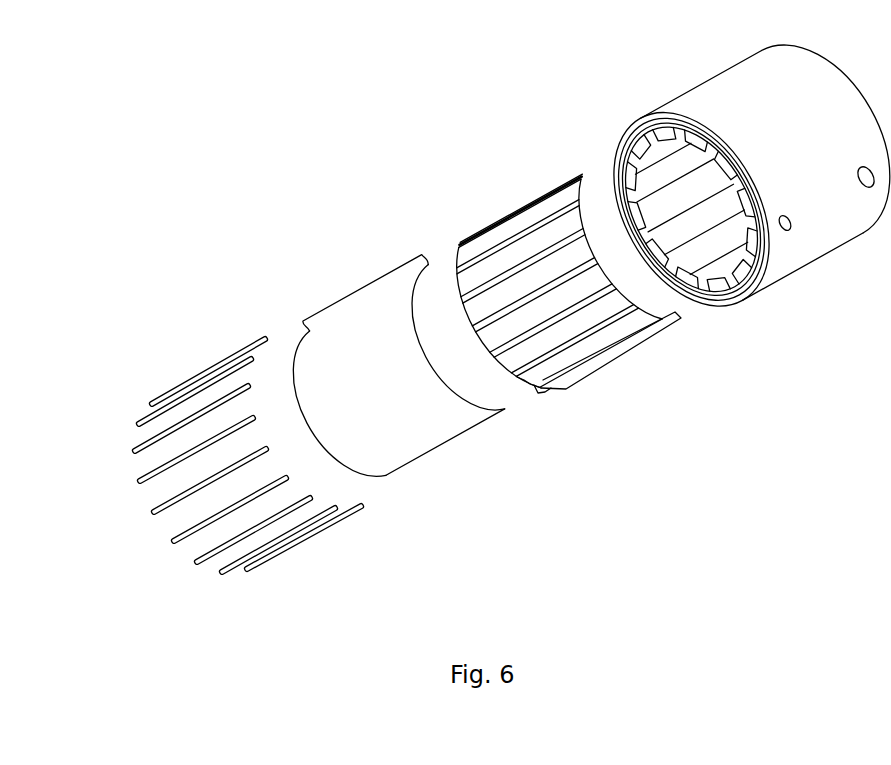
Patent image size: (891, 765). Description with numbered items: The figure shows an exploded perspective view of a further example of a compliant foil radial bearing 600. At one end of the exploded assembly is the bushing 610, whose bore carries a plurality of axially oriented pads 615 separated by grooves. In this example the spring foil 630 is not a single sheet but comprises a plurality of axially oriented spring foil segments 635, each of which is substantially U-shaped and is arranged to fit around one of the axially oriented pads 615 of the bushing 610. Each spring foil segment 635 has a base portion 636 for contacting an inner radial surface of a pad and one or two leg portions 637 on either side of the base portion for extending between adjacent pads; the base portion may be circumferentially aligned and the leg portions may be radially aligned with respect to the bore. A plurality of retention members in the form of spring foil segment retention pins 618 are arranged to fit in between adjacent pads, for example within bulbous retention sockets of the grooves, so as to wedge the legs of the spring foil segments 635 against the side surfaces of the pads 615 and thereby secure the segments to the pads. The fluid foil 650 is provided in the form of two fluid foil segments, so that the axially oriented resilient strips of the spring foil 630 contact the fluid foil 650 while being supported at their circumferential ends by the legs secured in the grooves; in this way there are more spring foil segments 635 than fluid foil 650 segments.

The compliant foil radial bearing 600 is at (177, 139).
The bushing 610 is at (687, 88).
The axially oriented pads 615 is at (698, 293).
The spring foil segment retention pins 618 is at (193, 378).
The spring foil 630 is at (473, 198).
The axially oriented spring foil segments 635 is at (632, 343).
The base portion 636 is at (528, 383).
The leg portions 637 is at (538, 393).
The fluid foil 650 is at (467, 452).